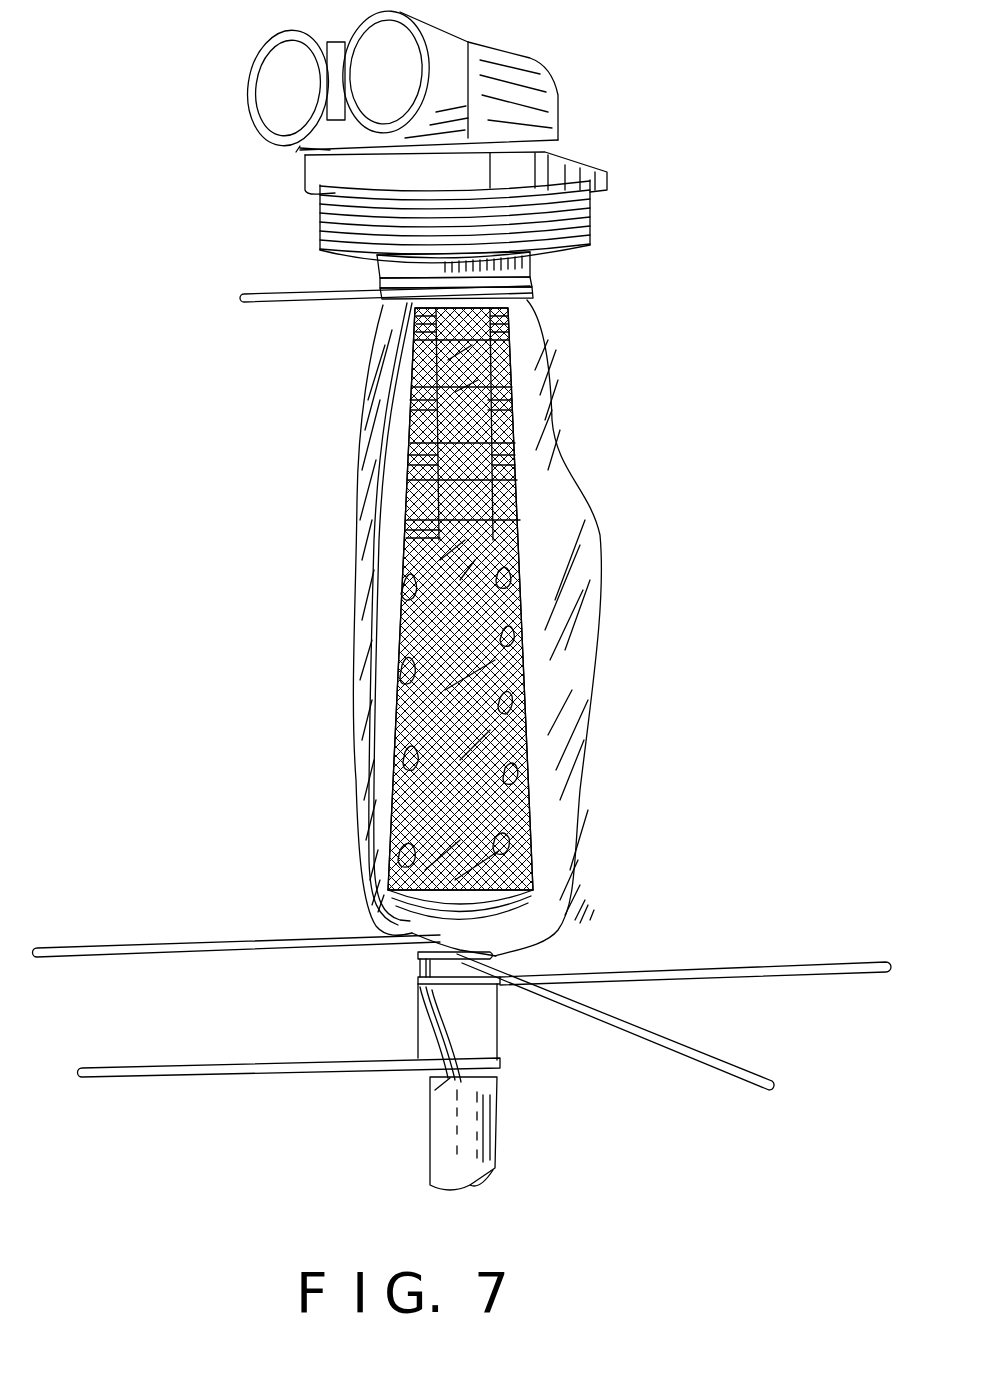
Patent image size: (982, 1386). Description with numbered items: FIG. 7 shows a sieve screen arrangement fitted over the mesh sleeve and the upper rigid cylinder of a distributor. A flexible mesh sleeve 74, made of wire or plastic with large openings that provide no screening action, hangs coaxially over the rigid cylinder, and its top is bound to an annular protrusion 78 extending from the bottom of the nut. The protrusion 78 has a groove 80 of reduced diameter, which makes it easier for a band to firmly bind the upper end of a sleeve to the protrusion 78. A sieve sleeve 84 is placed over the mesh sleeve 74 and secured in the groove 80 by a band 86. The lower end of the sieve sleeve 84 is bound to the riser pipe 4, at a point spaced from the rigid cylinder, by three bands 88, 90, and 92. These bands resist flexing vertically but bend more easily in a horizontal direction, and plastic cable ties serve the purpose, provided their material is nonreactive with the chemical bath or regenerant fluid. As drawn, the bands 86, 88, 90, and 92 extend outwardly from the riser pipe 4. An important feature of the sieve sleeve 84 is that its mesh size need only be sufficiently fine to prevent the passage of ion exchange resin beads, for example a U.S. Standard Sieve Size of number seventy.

The riser pipe 4 is at (480, 1133).
The flexible mesh sleeve 74 is at (530, 833).
The annular protrusion 78 is at (378, 268).
The groove 80 is at (533, 288).
The sieve sleeve 84 is at (588, 593).
The band 86 is at (357, 301).
The band 88 is at (333, 933).
The band 90 is at (643, 967).
The band 92 is at (368, 1060).